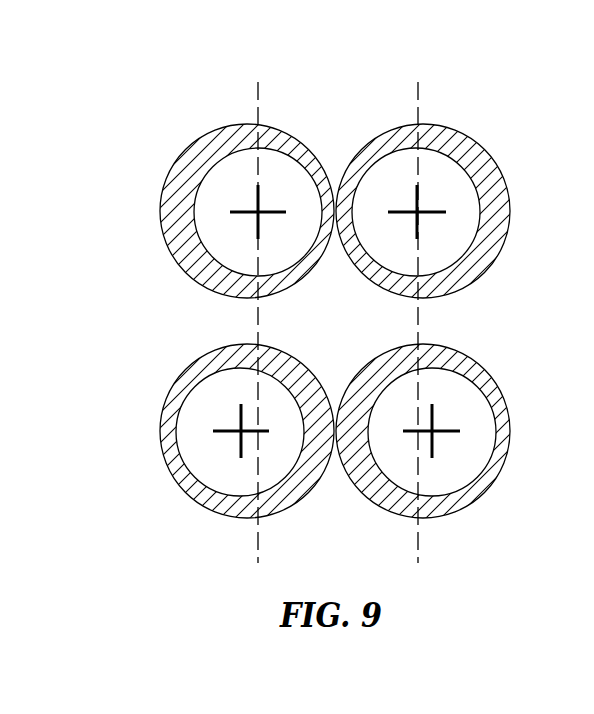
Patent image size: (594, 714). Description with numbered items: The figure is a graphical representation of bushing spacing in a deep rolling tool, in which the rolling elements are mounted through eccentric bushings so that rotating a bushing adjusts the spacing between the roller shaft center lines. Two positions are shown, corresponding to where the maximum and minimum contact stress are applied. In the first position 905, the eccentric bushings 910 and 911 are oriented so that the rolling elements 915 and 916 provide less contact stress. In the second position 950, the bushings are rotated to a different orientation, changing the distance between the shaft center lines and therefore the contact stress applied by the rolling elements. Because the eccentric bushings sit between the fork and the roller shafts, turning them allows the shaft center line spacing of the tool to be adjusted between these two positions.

The first position 905 is at (193, 110).
The second position 950 is at (392, 103).
The bushing 910 is at (162, 193).
The rolling element 915 is at (215, 245).
The bushing 911 is at (482, 146).
The rolling element 916 is at (510, 227).